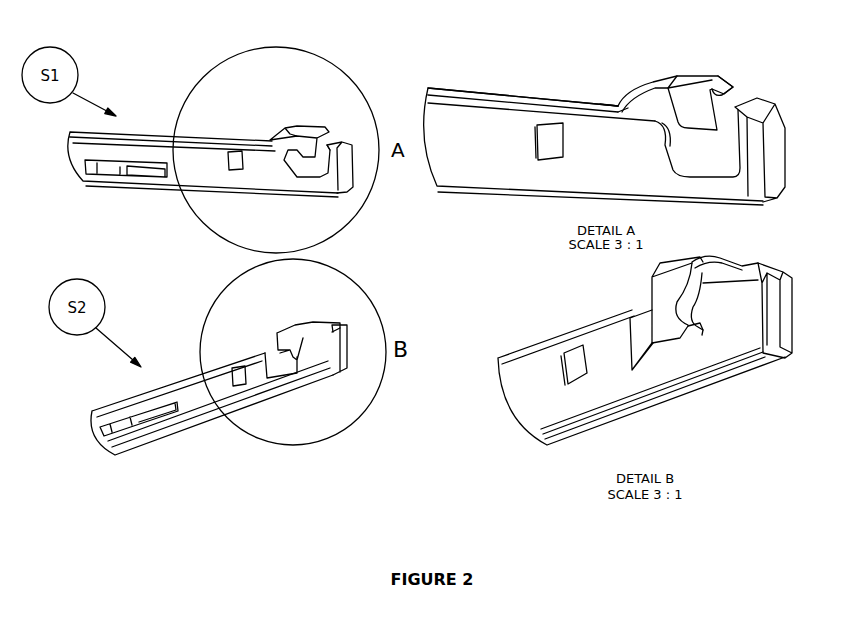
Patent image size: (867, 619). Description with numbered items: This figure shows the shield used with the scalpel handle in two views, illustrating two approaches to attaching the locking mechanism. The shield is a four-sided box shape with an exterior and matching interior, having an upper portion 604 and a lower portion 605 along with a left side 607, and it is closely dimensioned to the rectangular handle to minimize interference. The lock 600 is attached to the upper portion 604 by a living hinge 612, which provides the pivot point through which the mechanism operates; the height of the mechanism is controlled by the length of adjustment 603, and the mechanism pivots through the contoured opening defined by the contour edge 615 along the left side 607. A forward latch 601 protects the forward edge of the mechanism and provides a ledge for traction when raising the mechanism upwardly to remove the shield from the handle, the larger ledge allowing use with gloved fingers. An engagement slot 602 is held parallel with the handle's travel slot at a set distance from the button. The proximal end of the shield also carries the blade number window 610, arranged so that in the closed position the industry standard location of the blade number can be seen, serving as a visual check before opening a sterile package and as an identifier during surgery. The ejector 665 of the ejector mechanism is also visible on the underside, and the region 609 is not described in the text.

The lock 600 is at (697, 78).
The forward latch 601 is at (739, 74).
The engagement slot 602 is at (667, 332).
The length of adjustment 603 is at (638, 73).
The upper portion 604 is at (461, 88).
The lower portion 605 is at (759, 379).
The left side 607 is at (196, 157).
The cutout region 609 is at (687, 148).
The blade number window 610 is at (240, 377).
The living hinge 612 is at (604, 101).
The contour edge 615 is at (620, 96).
The ejector 665 is at (111, 442).